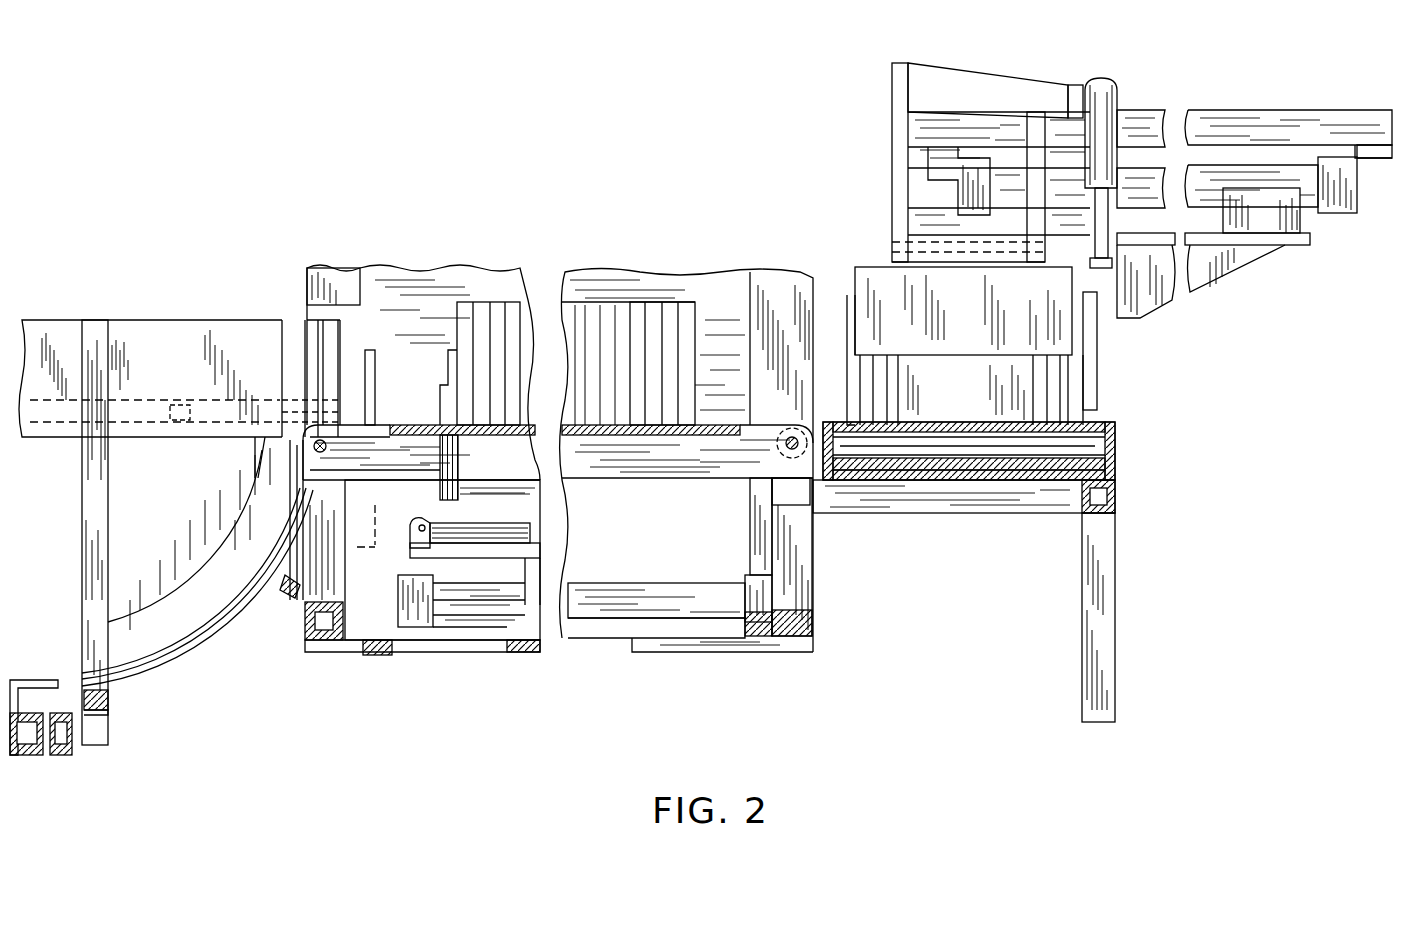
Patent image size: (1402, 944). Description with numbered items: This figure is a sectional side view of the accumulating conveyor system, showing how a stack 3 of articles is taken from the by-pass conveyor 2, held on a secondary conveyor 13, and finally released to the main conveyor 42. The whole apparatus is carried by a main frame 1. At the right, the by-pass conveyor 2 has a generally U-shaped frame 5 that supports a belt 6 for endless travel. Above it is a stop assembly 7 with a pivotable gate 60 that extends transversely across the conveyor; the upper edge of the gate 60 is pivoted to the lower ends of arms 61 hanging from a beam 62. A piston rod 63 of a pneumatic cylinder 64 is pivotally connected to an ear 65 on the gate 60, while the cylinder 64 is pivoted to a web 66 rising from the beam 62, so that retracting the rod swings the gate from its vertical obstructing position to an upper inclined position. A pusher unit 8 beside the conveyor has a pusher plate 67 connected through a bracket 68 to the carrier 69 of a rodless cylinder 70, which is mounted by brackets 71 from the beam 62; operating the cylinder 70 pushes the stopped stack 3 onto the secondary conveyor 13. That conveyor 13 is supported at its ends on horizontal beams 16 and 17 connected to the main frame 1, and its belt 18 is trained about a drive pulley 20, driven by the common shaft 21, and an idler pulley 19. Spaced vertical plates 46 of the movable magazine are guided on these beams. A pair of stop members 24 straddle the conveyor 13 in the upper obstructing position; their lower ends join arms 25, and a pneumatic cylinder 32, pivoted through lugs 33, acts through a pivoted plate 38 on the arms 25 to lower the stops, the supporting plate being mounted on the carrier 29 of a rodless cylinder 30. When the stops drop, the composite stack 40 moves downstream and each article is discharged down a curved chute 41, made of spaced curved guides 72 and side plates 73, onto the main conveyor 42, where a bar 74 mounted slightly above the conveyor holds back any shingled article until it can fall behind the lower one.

The main frame 1 is at (325, 266).
The by-pass conveyor 2 is at (1120, 440).
The stack 3 is at (373, 262).
The U-shaped frame 5 is at (85, 253).
The belt 6 is at (900, 432).
The stop assembly 7 is at (885, 205).
The pusher unit 8 is at (1108, 352).
The secondary conveyor 13 is at (660, 483).
The horizontal beam 16 is at (345, 492).
The horizontal beam 17 is at (772, 492).
The belt 18 is at (762, 425).
The idler pulley 19 is at (776, 447).
The drive pulley 20 is at (300, 442).
The common shaft 21 is at (328, 452).
The stop member 24 is at (450, 385).
The arm 25 is at (505, 495).
The carrier 29 is at (540, 583).
The rodless cylinder 30 is at (468, 635).
The pneumatic cylinder 32 is at (440, 523).
The lug 33 is at (415, 540).
The plate 38 is at (502, 558).
The composite stack 40 is at (650, 300).
The curved chute 41 is at (228, 648).
The main conveyor 42 is at (75, 755).
The vertical plate 46 is at (728, 285).
The gate 60 is at (930, 350).
The arm 61 is at (892, 103).
The beam 62 is at (1245, 110).
The piston rod 63 is at (1108, 215).
The pneumatic cylinder 64 is at (1117, 88).
The ear 65 is at (1060, 285).
The web 66 is at (1015, 88).
The pusher plate 67 is at (1100, 393).
The bracket 68 is at (1205, 275).
The carrier 69 is at (1290, 240).
The rodless cylinder 70 is at (1272, 165).
The bracket 71 is at (950, 178).
The curved guide 72 is at (148, 680).
The side plate 73 is at (158, 605).
The bar 74 is at (38, 680).